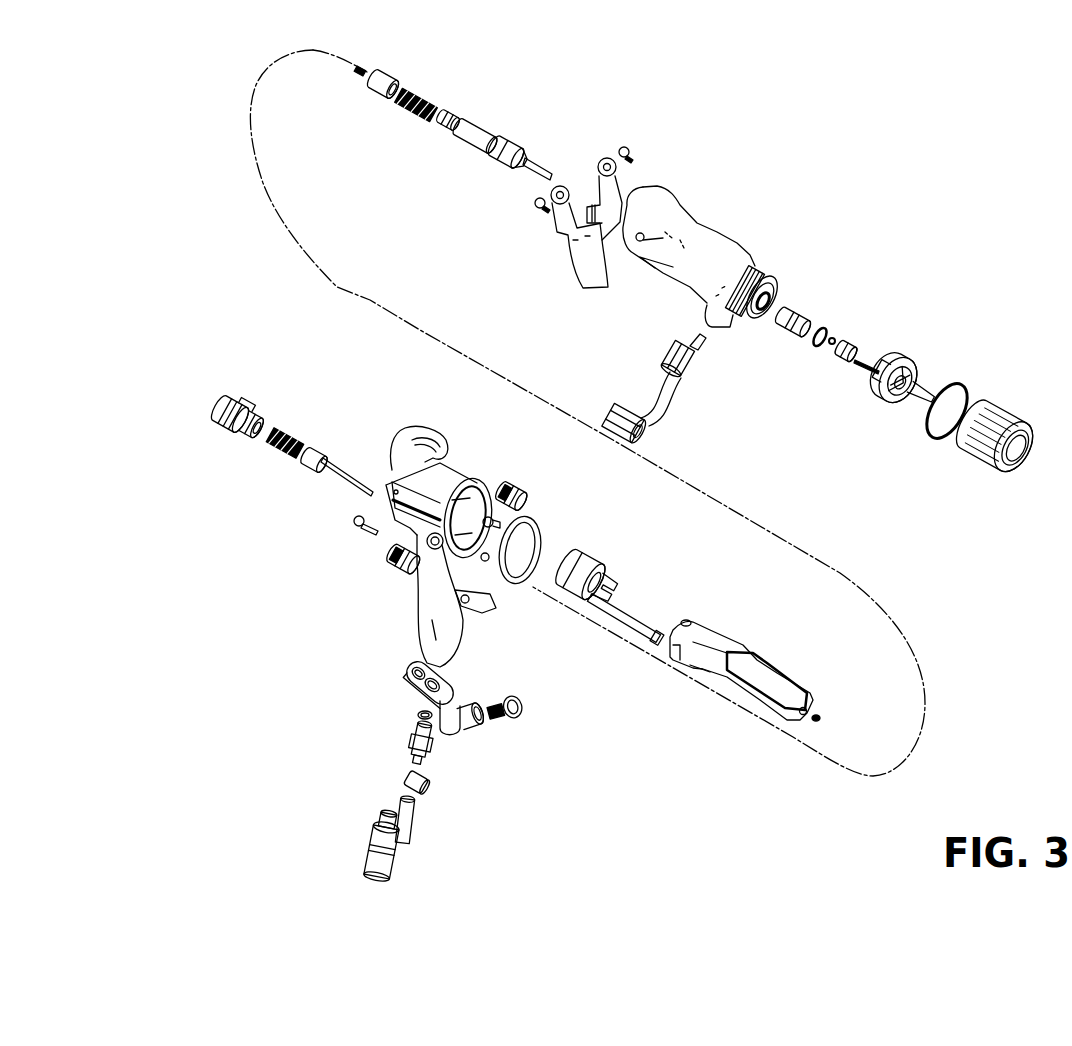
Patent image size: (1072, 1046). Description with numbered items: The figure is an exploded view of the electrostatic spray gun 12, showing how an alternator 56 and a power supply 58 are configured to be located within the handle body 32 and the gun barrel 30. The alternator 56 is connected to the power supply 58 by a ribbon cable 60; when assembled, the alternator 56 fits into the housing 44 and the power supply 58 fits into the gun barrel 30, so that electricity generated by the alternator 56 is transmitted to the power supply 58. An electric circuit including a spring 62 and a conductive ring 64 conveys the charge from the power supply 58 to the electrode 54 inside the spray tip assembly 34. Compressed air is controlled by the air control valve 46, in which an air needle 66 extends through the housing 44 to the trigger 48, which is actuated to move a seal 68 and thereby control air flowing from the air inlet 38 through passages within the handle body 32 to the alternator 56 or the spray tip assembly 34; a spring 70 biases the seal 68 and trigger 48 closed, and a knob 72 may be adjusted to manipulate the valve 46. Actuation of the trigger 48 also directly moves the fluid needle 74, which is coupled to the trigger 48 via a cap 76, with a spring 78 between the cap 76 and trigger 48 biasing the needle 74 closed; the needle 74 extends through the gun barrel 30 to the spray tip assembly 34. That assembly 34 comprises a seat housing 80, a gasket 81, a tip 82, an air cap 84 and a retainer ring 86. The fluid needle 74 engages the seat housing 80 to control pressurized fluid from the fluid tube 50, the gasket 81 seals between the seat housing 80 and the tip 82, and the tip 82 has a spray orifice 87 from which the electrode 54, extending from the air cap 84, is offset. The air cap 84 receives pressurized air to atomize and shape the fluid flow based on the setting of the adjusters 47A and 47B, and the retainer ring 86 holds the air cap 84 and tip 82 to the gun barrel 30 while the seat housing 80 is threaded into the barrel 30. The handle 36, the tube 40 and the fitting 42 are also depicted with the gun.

The electrostatic spray gun 12 is at (884, 174).
The gun barrel 30 is at (683, 212).
The handle body 32 is at (491, 467).
The spray tip assembly 34 is at (948, 479).
The handle 36 is at (425, 633).
The air inlet 38 is at (373, 841).
The tube 40 is at (414, 814).
The manifold fitting 42 is at (460, 736).
The housing 44 is at (450, 482).
The air control valve 46 is at (198, 441).
The adjuster 47A is at (393, 562).
The adjuster 47B is at (523, 489).
The trigger 48 is at (587, 273).
The fluid tube 50 is at (663, 415).
The electrode 54 is at (870, 368).
The alternator 56 is at (592, 558).
The power supply 58 is at (697, 633).
The ribbon cable 60 is at (633, 620).
The spring 62 is at (819, 714).
The conductive ring 64 is at (812, 343).
The air needle 66 is at (337, 468).
The seal 68 is at (312, 452).
The spring 70 is at (282, 448).
The knob 72 is at (250, 397).
The fluid needle 74 is at (480, 137).
The cap 76 is at (386, 76).
The spring 78 is at (420, 107).
The seat housing 80 is at (797, 313).
The gasket 81 is at (832, 347).
The tip 82 is at (848, 343).
The air cap 84 is at (893, 357).
The retainer ring 86 is at (1010, 407).
The spray orifice 87 is at (860, 360).